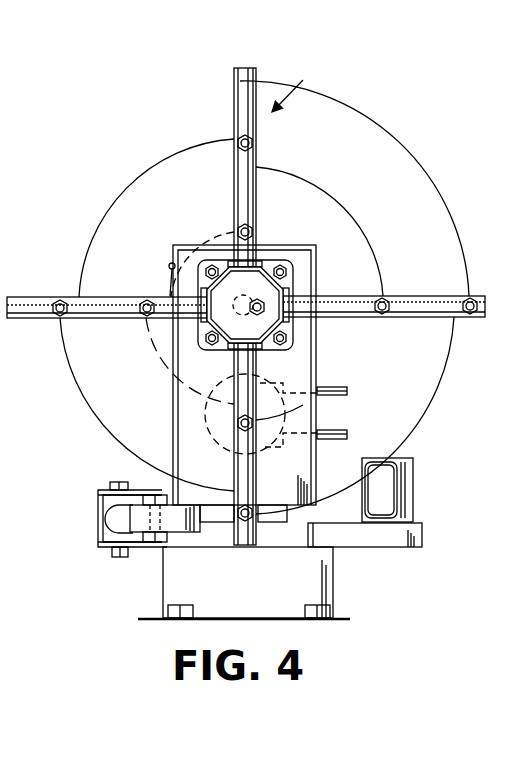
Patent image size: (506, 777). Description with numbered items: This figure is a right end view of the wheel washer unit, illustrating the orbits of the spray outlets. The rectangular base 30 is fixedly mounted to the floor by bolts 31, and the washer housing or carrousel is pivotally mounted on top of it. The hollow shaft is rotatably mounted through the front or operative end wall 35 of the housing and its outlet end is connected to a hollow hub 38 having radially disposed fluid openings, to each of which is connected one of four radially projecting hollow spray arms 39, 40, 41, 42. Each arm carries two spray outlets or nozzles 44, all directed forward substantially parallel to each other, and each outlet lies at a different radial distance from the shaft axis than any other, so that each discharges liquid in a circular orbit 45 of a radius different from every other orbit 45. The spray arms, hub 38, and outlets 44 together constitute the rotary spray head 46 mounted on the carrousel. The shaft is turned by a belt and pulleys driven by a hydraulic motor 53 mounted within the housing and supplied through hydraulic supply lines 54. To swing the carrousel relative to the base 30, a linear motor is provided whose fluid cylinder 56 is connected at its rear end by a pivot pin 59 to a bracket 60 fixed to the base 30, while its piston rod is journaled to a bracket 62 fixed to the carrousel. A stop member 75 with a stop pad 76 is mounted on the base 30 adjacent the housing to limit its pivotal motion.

The base 30 is at (256, 587).
The bolts 31 is at (307, 608).
The front wall 35 is at (268, 480).
The hollow hub 38 is at (245, 305).
The spray arm 39 is at (234, 192).
The spray arm 40 is at (424, 313).
The spray arm 41 is at (258, 372).
The spray arm 42 is at (23, 303).
The spray outlets 44 is at (254, 143).
The circular orbit 45 is at (193, 147).
The rotary spray head 46 is at (292, 85).
The hydraulic motor 53 is at (206, 418).
The hydraulic supply lines 54 is at (338, 392).
The fluid cylinder 56 is at (118, 518).
The pivot pin 59 is at (118, 502).
The bracket 60 is at (97, 541).
The bracket 62 is at (185, 530).
The stop member 75 is at (410, 472).
The stop pad 76 is at (383, 493).